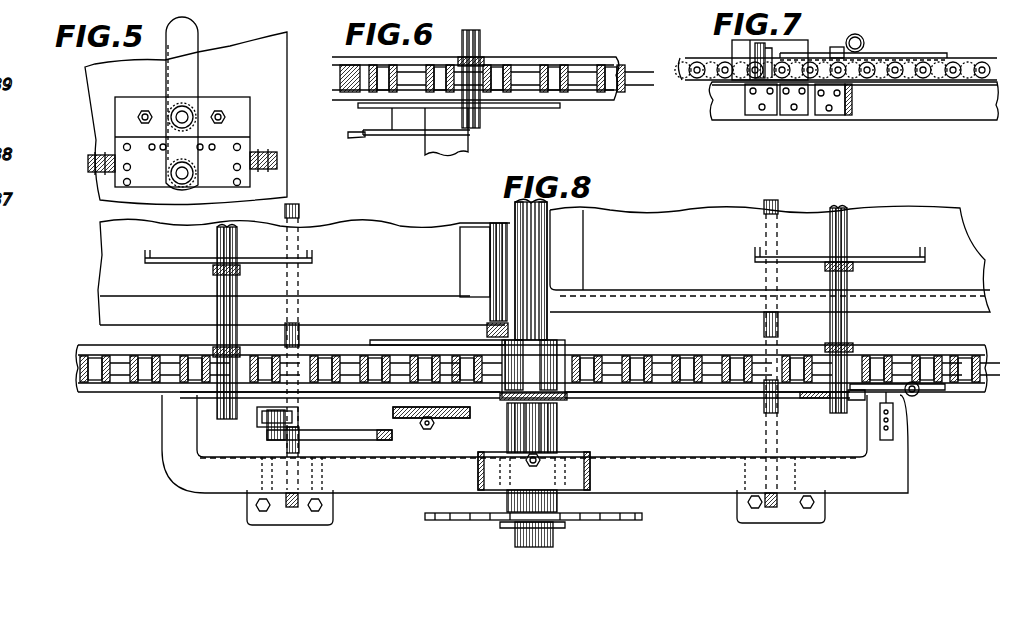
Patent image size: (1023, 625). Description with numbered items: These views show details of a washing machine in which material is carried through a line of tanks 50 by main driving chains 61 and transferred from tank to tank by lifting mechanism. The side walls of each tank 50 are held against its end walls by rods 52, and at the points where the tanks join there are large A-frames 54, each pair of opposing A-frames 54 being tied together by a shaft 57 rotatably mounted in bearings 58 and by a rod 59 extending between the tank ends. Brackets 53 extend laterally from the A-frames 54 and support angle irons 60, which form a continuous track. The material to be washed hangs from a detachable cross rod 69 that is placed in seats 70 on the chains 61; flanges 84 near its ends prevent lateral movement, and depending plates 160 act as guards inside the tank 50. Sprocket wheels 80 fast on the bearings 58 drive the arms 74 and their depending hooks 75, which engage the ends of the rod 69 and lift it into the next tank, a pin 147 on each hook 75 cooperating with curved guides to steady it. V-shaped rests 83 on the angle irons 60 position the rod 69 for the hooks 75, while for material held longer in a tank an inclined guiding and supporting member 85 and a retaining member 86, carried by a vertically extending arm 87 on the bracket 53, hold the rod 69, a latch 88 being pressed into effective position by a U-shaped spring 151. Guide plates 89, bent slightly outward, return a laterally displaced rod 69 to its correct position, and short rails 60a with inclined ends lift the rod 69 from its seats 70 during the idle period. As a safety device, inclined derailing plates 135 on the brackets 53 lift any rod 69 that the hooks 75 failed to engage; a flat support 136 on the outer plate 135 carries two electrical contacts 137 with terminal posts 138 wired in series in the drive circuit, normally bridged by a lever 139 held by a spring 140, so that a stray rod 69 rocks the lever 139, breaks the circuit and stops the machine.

In FIG. 8, the tank 50 is at (325, 235).
In FIG. 8, the rod 52 is at (460, 258).
In FIG. 8, the bracket 53 is at (880, 480).
In FIG. 8, the A-frame 54 is at (580, 452).
In FIG. 8, the shaft 57 is at (550, 320).
In FIG. 8, the bearing 58 is at (562, 528).
In FIG. 8, the rod 59 is at (300, 336).
In FIG. 6, the angle iron 60 is at (590, 58).
In FIG. 7, the angle iron 60 is at (933, 105).
In FIG. 8, the angle iron 60 is at (950, 353).
In FIG. 6, the short rail 60a is at (520, 108).
In FIG. 7, the short rail 60a is at (920, 57).
In FIG. 6, the driving chain 61 is at (616, 76).
In FIG. 8, the driving chain 61 is at (640, 356).
In FIG. 6, the cross rod 69 is at (482, 45).
In FIG. 7, the cross rod 69 is at (865, 40).
In FIG. 8, the cross rod 69 is at (222, 240).
In FIG. 7, the seat 70 is at (838, 47).
In FIG. 8, the seat 70 is at (220, 347).
In FIG. 8, the arm 74 is at (362, 440).
In FIG. 8, the hook 75 is at (270, 422).
In FIG. 8, the sprocket wheel 80 is at (640, 520).
In FIG. 8, the rest 83 is at (205, 393).
In FIG. 6, the flange 84 is at (486, 62).
In FIG. 8, the flange 84 is at (853, 264).
In FIG. 8, the guiding and supporting member 85 is at (818, 398).
In FIG. 8, the retaining member 86 is at (918, 396).
In FIG. 8, the arm 87 is at (895, 422).
In FIG. 8, the latch 88 is at (860, 401).
In FIG. 6, the plate 89 is at (366, 138).
In FIG. 7, the plate 89 is at (733, 55).
In FIG. 5, the derailing plate 135 is at (262, 50).
In FIG. 8, the derailing plate 135 is at (402, 351).
In FIG. 5, the support 136 is at (225, 100).
In FIG. 5, the electrical contact 137 is at (118, 148).
In FIG. 8, the electrical contact 137 is at (430, 417).
In FIG. 5, the terminal post 138 is at (88, 164).
In FIG. 5, the lever 139 is at (185, 38).
In FIG. 8, the lever 139 is at (430, 430).
In FIG. 5, the spring 140 is at (168, 97).
In FIG. 8, the pin 147 is at (296, 413).
In FIG. 8, the U-shaped spring 151 is at (945, 392).
In FIG. 8, the depending plate 160 is at (168, 265).